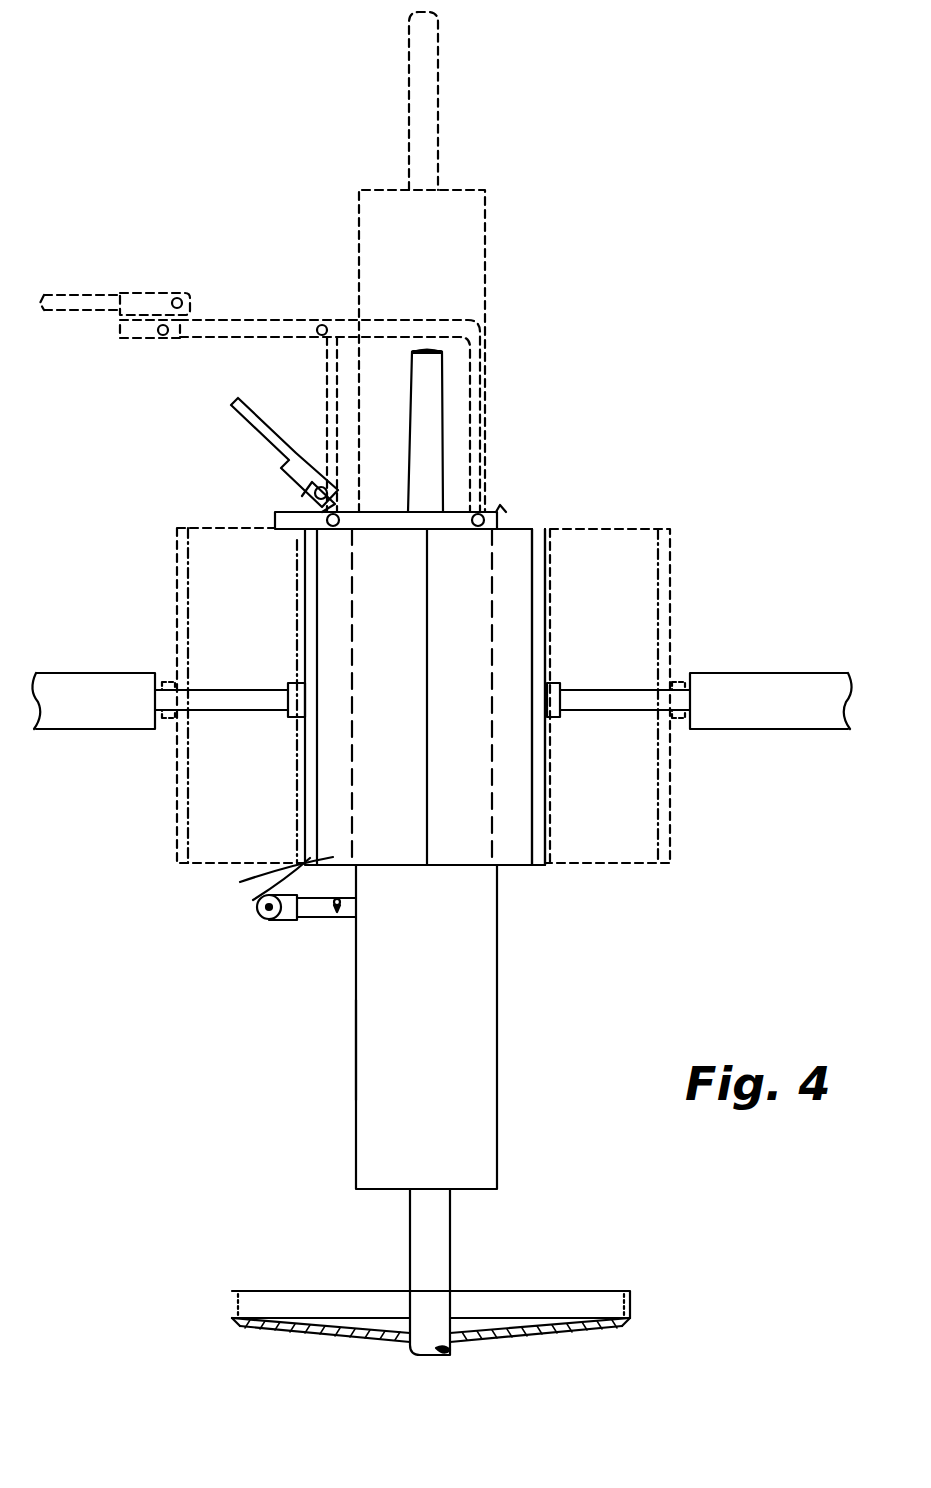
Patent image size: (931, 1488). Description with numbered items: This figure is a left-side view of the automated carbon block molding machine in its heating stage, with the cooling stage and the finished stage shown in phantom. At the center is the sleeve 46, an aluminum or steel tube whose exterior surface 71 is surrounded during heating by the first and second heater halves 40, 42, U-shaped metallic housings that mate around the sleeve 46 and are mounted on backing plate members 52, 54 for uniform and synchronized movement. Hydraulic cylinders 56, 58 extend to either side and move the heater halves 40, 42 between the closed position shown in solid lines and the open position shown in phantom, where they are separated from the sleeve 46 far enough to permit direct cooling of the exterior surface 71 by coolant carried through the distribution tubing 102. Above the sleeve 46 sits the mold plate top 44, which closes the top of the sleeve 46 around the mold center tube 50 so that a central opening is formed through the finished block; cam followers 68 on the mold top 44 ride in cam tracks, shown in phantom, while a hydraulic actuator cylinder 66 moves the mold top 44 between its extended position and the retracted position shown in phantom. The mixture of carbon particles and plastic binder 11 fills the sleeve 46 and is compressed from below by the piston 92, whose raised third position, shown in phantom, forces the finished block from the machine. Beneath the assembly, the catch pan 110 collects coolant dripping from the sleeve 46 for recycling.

The mixture of granular carbon particles and plastic binder material 11 is at (485, 243).
The mold center tube 50 is at (440, 105).
The hydraulic actuator cylinder 66 is at (68, 293).
The cam followers 68 is at (322, 320).
The mold plate top 44 is at (233, 343).
The backing plate member 54 is at (343, 707).
The first heater half 40 is at (623, 833).
The second heater half 42 is at (188, 808).
The backing plate member 52 is at (538, 860).
The hydraulic cylinder 58 is at (87, 720).
The hydraulic cylinder 56 is at (740, 720).
The distribution tubing 102 is at (320, 913).
The sleeve 46 is at (356, 1112).
The exterior surface 71 is at (373, 1035).
The piston 92 is at (432, 1230).
The catch pan 110 is at (232, 1295).